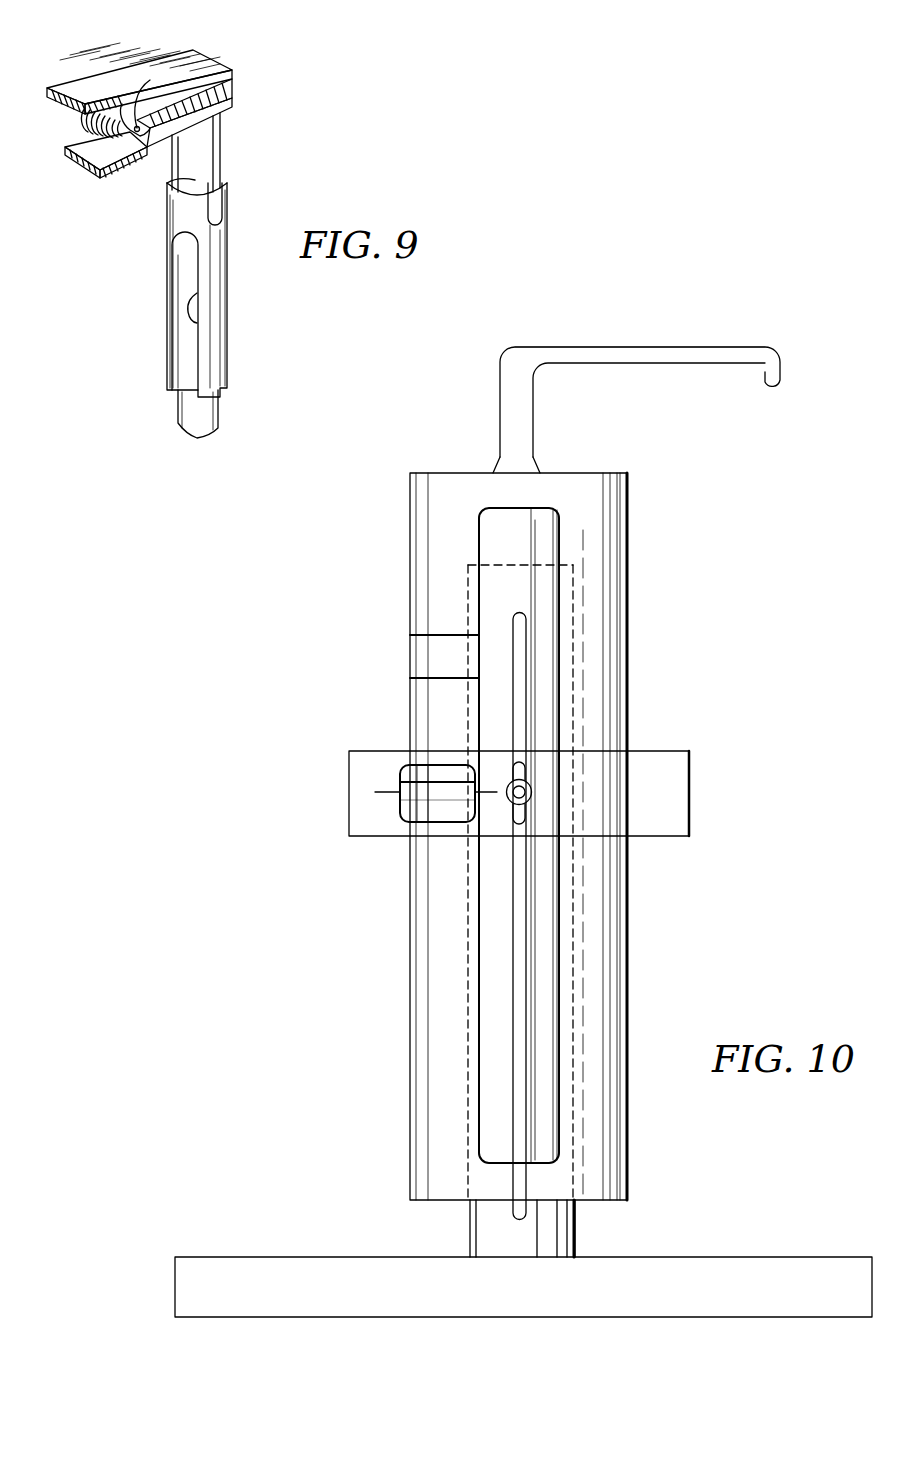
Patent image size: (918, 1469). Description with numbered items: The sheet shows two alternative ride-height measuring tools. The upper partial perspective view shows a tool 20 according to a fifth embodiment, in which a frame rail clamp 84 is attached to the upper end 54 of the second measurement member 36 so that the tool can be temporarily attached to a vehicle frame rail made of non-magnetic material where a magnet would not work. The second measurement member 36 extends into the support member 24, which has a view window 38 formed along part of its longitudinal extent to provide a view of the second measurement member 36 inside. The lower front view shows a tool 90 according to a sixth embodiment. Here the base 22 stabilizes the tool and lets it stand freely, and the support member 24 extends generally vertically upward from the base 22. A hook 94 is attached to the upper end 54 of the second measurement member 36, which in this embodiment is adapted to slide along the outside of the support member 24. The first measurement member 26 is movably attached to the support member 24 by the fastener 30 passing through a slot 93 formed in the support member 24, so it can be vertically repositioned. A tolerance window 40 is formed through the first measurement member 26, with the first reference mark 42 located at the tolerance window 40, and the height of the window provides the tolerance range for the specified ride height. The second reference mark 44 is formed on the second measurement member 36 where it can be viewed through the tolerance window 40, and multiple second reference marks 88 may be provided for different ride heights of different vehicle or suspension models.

In FIG. 9, the tool 20 is at (78, 52).
In FIG. 9, the frame rail clamp 84 is at (146, 70).
In FIG. 9, the upper end 54 is at (226, 120).
In FIG. 10, the upper end 54 is at (636, 478).
In FIG. 9, the second measurement member 36 is at (226, 152).
In FIG. 10, the second measurement member 36 is at (454, 472).
In FIG. 9, the view window 38 is at (198, 290).
In FIG. 10, the view window 38 is at (555, 548).
In FIG. 9, the support member 24 is at (230, 332).
In FIG. 10, the support member 24 is at (514, 564).
In FIG. 10, the hook 94 is at (678, 346).
In FIG. 10, the slot 93 is at (516, 612).
In FIG. 10, the multiple second reference marks 88 is at (432, 678).
In FIG. 10, the second reference mark 44 is at (436, 782).
In FIG. 10, the first reference mark 42 is at (400, 793).
In FIG. 10, the tolerance window 40 is at (412, 803).
In FIG. 10, the fastener 30 is at (533, 793).
In FIG. 10, the first measurement member 26 is at (689, 797).
In FIG. 10, the tool 90 is at (378, 1090).
In FIG. 10, the base 22 is at (760, 1257).